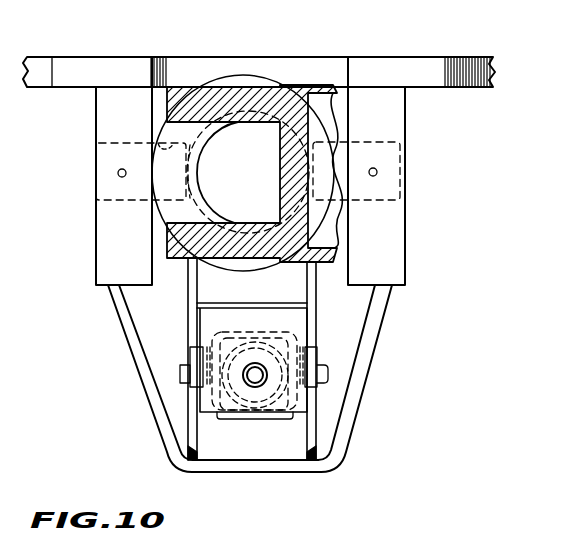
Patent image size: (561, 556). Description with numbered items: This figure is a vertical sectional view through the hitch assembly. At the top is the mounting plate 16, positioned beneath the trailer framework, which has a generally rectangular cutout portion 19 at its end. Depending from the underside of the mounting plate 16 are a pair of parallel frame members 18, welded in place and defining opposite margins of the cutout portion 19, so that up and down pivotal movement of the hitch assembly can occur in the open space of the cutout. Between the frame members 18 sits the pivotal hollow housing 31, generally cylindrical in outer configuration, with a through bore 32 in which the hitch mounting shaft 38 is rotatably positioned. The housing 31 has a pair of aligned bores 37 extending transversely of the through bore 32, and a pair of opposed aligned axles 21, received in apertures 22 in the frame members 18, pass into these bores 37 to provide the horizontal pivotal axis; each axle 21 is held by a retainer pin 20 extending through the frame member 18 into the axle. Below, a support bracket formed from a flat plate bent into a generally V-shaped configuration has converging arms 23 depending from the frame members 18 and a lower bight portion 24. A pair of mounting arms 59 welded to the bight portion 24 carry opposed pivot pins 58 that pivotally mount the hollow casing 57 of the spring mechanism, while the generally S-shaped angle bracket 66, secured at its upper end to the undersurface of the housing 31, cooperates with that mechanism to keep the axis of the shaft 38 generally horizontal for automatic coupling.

The mounting plate 16 is at (468, 57).
The cutout portion 19 is at (160, 72).
The frame members 18 is at (100, 255).
The retainer pin 20 is at (118, 171).
The axles 21 is at (100, 187).
The apertures 22 is at (120, 200).
The converging arms 23 is at (140, 376).
The bight portion 24 is at (262, 472).
The housing 31 is at (257, 80).
The through bore 32 is at (212, 134).
The aligned bores 37 is at (181, 140).
The hitch mounting shaft 38 is at (249, 193).
The hollow casing 57 is at (233, 413).
The pivot pins 58 is at (180, 368).
The mounting arms 59 is at (198, 448).
The angle bracket 66 is at (233, 296).